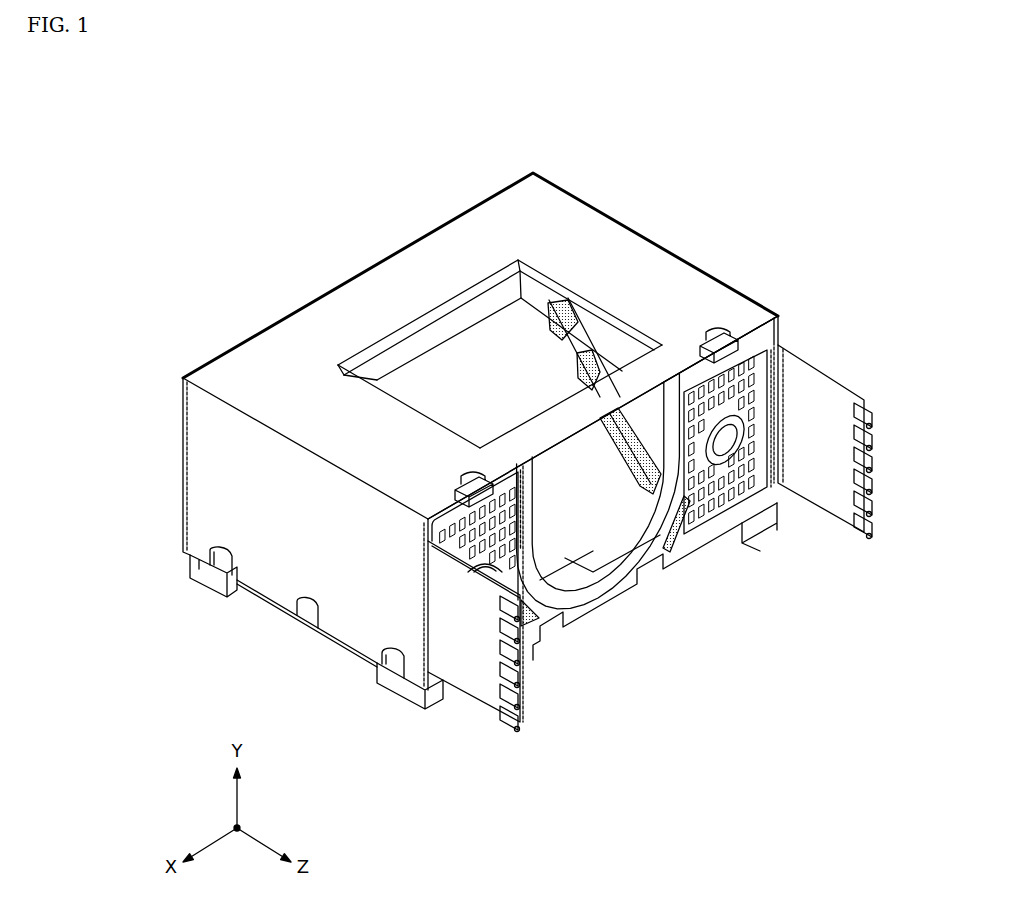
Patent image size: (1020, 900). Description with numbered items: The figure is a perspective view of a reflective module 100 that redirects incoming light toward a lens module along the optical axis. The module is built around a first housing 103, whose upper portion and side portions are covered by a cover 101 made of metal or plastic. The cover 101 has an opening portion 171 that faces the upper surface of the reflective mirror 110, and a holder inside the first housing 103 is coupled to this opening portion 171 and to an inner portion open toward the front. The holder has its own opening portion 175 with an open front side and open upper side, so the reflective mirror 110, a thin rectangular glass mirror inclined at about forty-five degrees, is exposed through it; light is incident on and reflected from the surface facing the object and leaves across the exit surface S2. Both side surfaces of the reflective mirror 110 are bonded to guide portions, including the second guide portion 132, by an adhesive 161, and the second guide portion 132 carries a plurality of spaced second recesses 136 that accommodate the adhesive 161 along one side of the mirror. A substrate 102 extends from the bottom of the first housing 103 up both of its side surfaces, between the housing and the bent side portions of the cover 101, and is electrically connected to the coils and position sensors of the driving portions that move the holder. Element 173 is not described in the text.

The reflective module 100 is at (312, 167).
The cover 101 is at (512, 212).
The substrate 102 is at (820, 430).
The first housing 103 is at (775, 372).
The reflective mirror 110 is at (437, 384).
The second guide portion 132 is at (615, 340).
The second recesses 136 is at (585, 353).
The adhesive 161 is at (562, 342).
The opening portion 171 is at (450, 293).
The U-shaped channel 173 is at (600, 595).
The opening portion 175 is at (628, 328).
The exit surface S2 is at (413, 452).